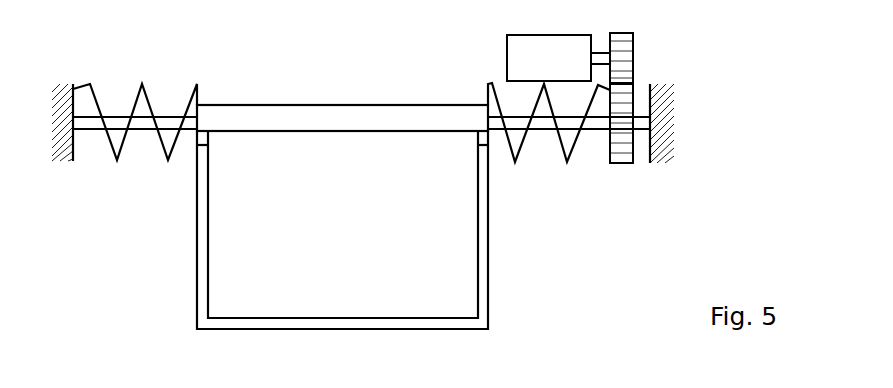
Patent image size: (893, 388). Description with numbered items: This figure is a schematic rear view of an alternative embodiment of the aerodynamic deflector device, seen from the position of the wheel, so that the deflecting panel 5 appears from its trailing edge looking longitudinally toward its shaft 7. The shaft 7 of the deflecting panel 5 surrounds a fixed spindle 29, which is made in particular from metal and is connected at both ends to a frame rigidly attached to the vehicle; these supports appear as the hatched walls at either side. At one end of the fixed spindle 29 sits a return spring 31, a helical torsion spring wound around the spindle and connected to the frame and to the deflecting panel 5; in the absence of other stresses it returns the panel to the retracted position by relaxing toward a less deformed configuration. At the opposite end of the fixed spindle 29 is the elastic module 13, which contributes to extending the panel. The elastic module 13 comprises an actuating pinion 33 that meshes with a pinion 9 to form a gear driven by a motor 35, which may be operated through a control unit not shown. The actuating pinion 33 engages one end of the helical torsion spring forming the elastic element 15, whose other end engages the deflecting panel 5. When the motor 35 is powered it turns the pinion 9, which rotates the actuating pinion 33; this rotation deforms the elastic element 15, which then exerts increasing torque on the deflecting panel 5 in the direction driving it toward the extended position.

The deflecting panel 5 is at (197, 273).
The shaft 7 is at (288, 105).
The pinion 9 is at (634, 44).
The elastic module 13 is at (635, 250).
The elastic element 15 is at (558, 140).
The fixed spindle 29 is at (165, 116).
The return spring 31 is at (165, 143).
The actuating pinion 33 is at (623, 163).
The motor 35 is at (558, 58).